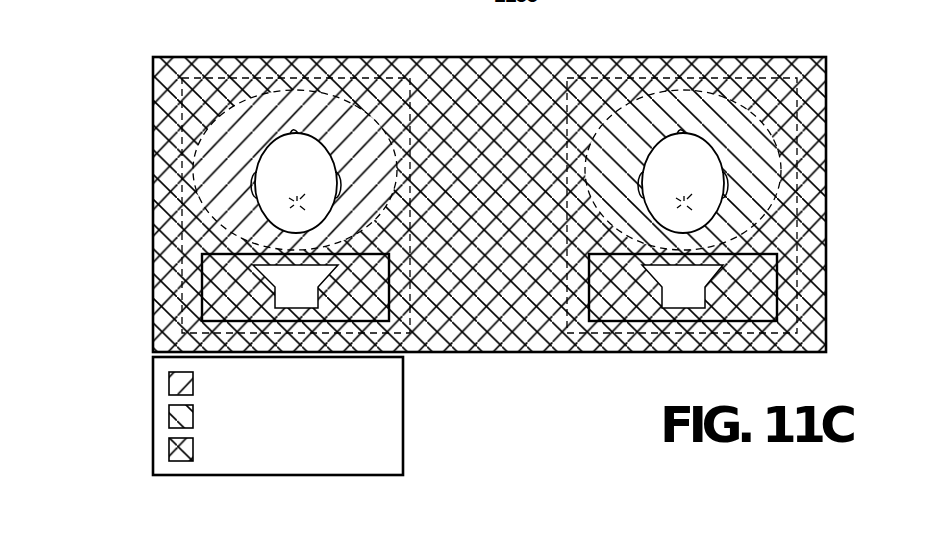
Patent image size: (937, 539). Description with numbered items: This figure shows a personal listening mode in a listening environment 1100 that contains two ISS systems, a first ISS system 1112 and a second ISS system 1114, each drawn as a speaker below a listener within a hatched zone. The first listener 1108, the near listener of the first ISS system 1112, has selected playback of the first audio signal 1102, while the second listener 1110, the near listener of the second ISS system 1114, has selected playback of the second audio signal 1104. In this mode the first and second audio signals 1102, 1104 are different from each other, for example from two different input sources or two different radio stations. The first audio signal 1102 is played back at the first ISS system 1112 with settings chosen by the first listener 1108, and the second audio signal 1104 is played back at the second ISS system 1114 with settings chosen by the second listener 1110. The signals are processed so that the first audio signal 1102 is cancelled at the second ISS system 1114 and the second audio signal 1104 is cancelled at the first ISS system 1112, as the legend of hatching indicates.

The listening environment 1100 is at (105, 61).
The first audio signal 1102 is at (403, 375).
The second audio signal 1104 is at (403, 413).
The first listener 1108 is at (255, 167).
The second listener 1110 is at (727, 202).
The first ISS system 1112 is at (178, 286).
The second ISS system 1114 is at (797, 296).